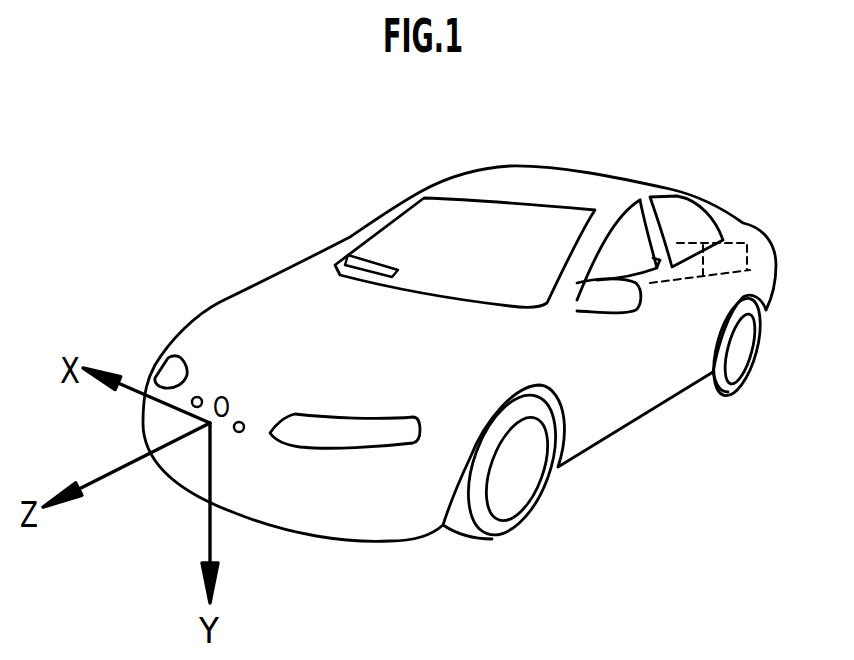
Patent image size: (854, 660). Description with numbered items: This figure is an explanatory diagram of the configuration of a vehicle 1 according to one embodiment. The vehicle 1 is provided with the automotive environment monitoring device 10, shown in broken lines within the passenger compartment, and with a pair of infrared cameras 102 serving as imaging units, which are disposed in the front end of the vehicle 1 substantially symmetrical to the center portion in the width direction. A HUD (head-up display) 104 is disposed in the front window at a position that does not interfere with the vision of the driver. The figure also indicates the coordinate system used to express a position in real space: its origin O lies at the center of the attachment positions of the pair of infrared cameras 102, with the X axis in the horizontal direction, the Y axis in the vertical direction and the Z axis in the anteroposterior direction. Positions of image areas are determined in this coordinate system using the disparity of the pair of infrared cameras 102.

The vehicle 1 is at (669, 132).
The automotive environment monitoring device 10 is at (745, 225).
The infrared cameras 102 is at (215, 381).
The HUD (head-up display) 104 is at (350, 230).